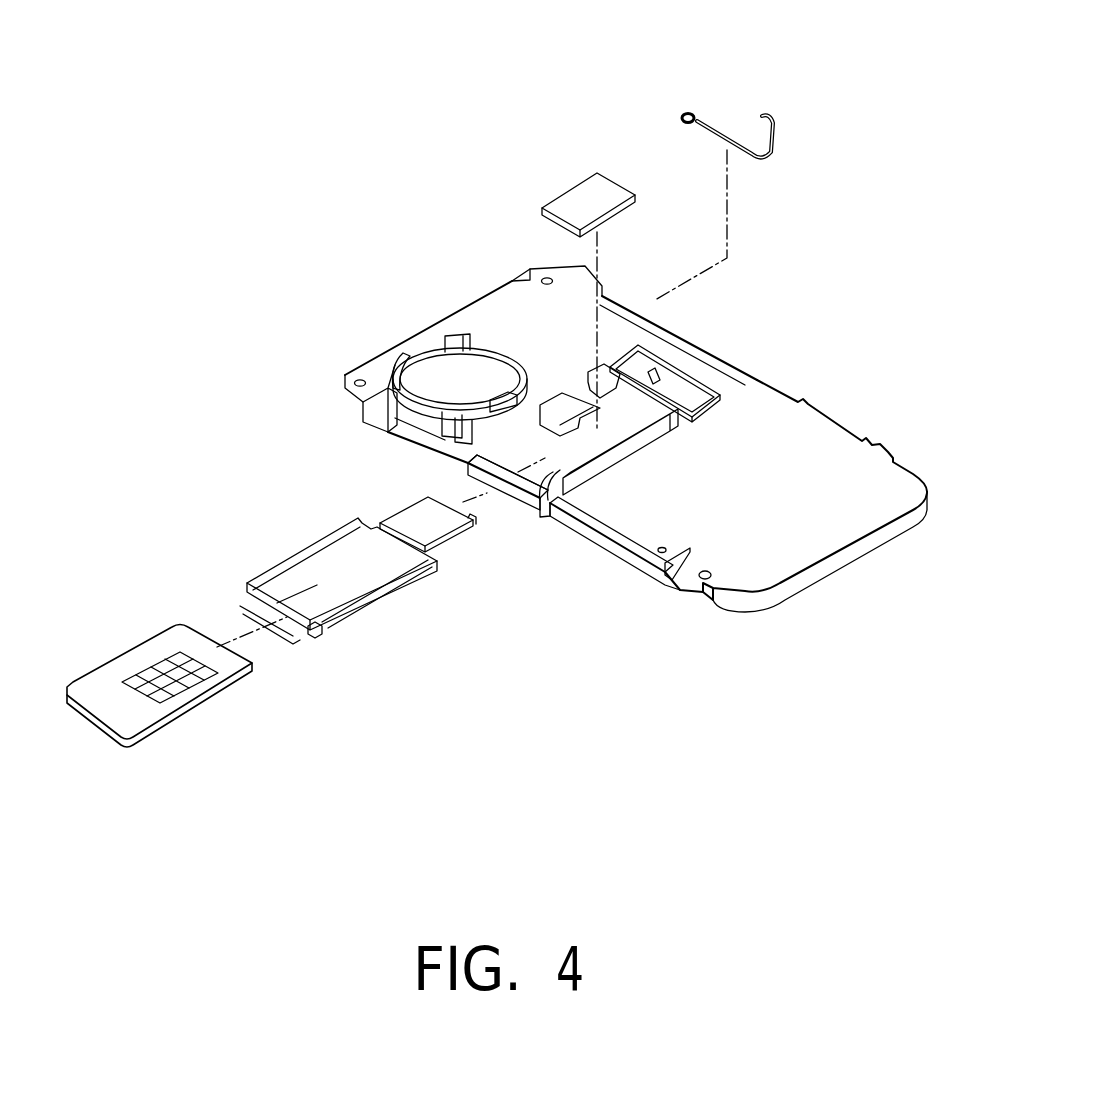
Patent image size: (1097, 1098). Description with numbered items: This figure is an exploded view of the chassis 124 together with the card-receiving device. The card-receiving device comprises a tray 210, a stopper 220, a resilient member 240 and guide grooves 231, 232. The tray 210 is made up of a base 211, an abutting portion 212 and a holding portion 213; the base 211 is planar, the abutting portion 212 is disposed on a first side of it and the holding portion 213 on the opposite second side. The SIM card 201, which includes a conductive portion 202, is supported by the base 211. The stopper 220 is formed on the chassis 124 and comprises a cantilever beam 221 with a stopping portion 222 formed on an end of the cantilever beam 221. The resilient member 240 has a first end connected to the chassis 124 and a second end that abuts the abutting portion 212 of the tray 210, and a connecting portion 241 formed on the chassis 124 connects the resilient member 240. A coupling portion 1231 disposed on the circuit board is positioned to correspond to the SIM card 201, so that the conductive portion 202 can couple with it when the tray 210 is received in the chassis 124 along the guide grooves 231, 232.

The chassis 124 is at (807, 430).
The coupling portion 1231 is at (580, 197).
The SIM card 201 is at (140, 718).
The conductive portion 202 is at (163, 665).
The tray 210 is at (582, 685).
The base 211 is at (370, 572).
The abutting portion 212 is at (440, 533).
The holding portion 213 is at (322, 637).
The stopper 220 is at (357, 187).
The cantilever beam 221 is at (588, 395).
The stopping portion 222 is at (550, 398).
The guide groove 231 is at (547, 498).
The guide groove 232 is at (468, 462).
The resilient member 240 is at (713, 132).
The connecting portion 241 is at (652, 387).